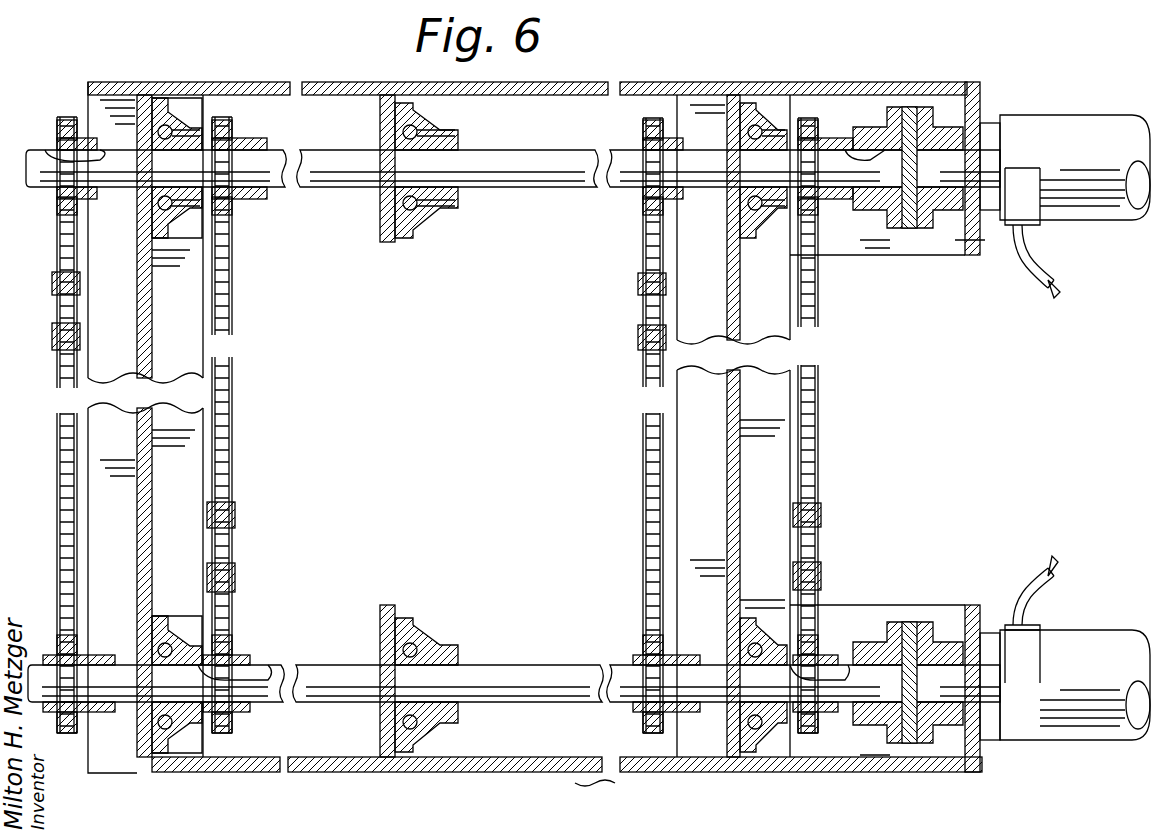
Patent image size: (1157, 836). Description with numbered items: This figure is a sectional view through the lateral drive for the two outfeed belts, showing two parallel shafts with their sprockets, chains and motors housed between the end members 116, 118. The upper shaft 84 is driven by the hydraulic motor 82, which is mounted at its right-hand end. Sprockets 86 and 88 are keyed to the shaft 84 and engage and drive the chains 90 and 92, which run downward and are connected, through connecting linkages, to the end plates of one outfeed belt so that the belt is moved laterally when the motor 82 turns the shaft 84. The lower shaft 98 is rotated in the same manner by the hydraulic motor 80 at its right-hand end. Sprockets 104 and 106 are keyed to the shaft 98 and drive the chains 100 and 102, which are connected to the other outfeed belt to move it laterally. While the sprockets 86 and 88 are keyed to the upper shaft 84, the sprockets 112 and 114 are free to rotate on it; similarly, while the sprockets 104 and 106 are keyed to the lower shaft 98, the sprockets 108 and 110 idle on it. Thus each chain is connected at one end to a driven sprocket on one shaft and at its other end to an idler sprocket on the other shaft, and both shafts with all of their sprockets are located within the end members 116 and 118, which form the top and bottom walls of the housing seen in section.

The hydraulic motor 80 is at (1085, 642).
The hydraulic motor 82 is at (1057, 123).
The shaft 84 is at (527, 180).
The sprocket 86 is at (60, 138).
The sprocket 88 is at (648, 140).
The chain 90 is at (62, 305).
The chain 92 is at (645, 262).
The shaft 98 is at (492, 678).
The chain 100 is at (233, 490).
The chain 102 is at (820, 428).
The sprocket 104 is at (235, 665).
The sprocket 106 is at (815, 658).
The sprocket 108 is at (70, 722).
The sprocket 110 is at (642, 722).
The sprocket 112 is at (228, 140).
The sprocket 114 is at (812, 140).
The end member 116 is at (340, 94).
The end member 118 is at (320, 764).